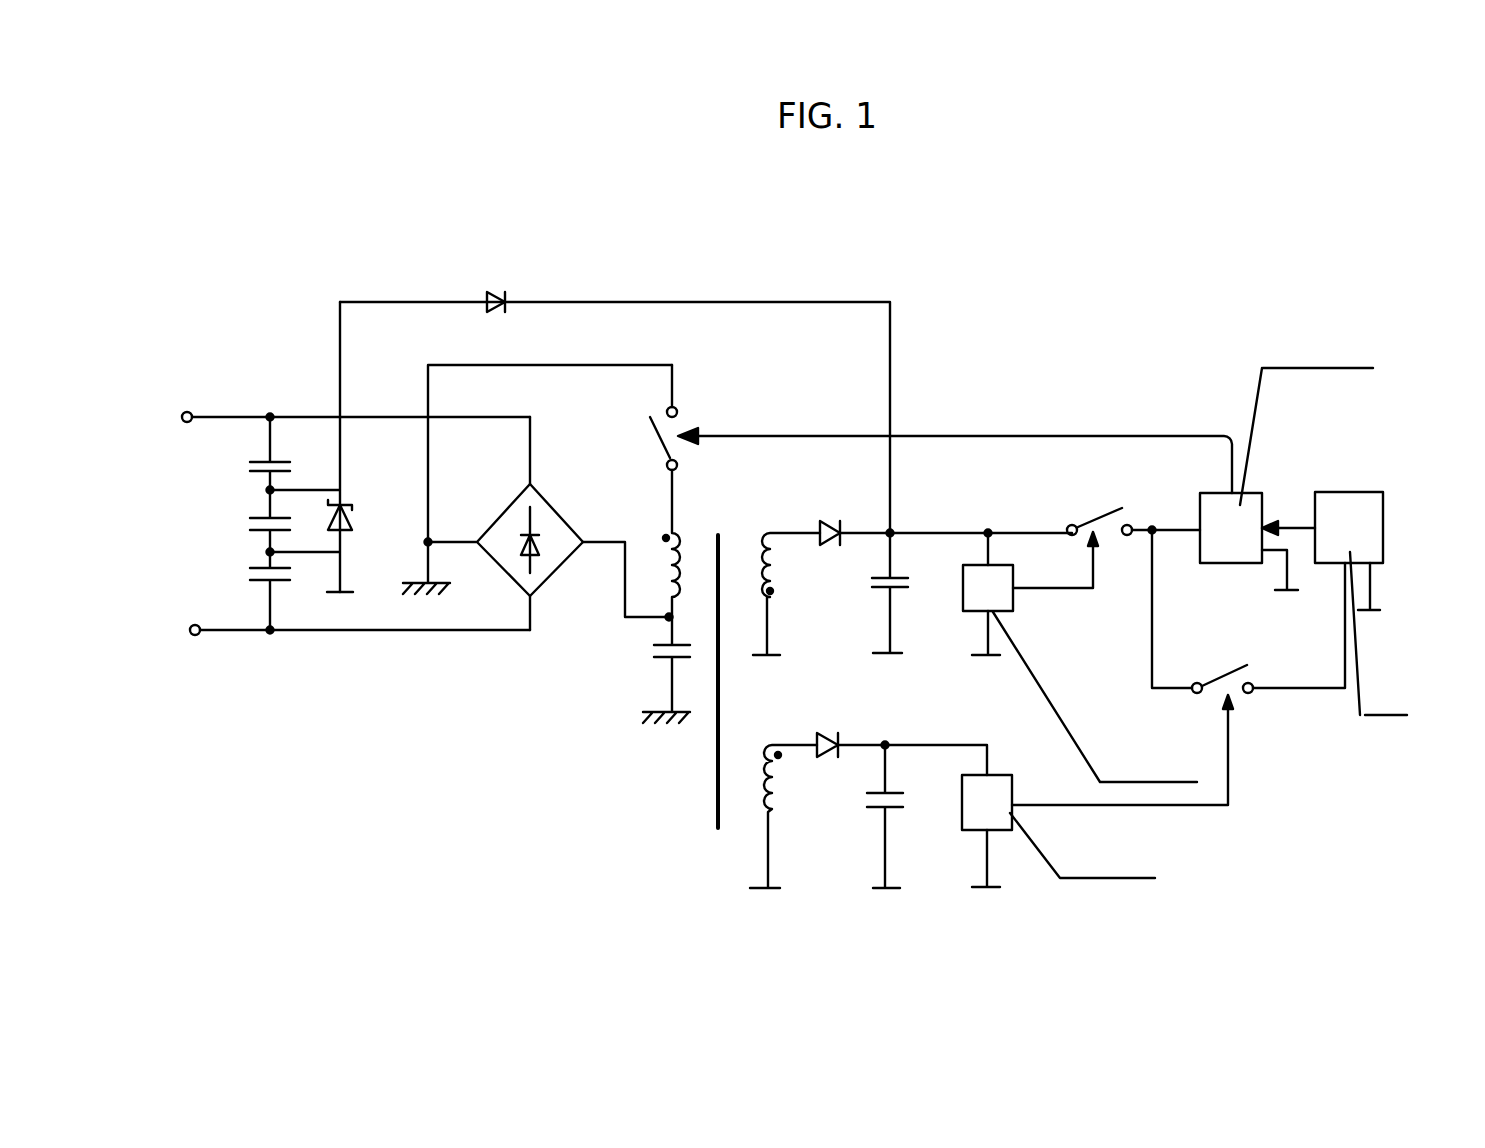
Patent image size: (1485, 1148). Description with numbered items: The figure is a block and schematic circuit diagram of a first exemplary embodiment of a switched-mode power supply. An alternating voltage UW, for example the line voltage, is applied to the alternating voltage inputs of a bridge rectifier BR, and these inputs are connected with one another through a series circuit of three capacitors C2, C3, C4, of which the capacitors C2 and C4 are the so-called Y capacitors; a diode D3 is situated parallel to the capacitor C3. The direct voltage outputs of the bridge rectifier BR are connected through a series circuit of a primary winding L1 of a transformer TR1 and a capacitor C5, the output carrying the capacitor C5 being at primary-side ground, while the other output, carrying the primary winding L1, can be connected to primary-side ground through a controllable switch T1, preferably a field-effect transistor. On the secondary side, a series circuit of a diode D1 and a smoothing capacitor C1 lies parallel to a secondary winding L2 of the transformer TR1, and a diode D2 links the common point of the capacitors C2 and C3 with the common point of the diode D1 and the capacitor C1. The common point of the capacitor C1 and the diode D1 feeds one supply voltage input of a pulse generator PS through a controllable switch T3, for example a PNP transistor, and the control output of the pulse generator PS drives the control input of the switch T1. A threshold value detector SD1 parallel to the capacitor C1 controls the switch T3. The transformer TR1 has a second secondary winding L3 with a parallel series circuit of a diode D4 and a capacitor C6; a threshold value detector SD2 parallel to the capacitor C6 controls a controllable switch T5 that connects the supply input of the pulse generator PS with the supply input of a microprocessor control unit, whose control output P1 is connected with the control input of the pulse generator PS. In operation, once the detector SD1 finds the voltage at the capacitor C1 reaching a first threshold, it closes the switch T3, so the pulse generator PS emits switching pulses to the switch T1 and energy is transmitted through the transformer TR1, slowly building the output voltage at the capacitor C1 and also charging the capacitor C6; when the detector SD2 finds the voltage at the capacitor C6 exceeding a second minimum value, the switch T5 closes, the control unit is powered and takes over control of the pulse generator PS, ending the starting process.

The alternating voltage UW is at (330, 523).
The capacitor C2 is at (247, 453).
The capacitor C3 is at (247, 521).
The capacitor C4 is at (247, 591).
The diode D3 is at (336, 447).
The diode D2 is at (615, 412).
The bridge rectifier BR is at (537, 497).
The controllable switch T1 is at (644, 417).
The primary winding L1 is at (687, 545).
The capacitor C5 is at (651, 670).
The transformer TR1 is at (712, 709).
The secondary winding L2 is at (782, 571).
The diode D1 is at (945, 513).
The capacitor C1 is at (871, 593).
The threshold value detector SD1 is at (1086, 657).
The controllable switch T3 is at (1130, 506).
The pulse generator PS is at (1026, 460).
The control output P1 is at (1288, 494).
The controllable switch T5 is at (1248, 611).
The second secondary winding L3 is at (783, 792).
The diode D4 is at (901, 735).
The capacitor C6 is at (866, 816).
The threshold value detector SD2 is at (1102, 791).